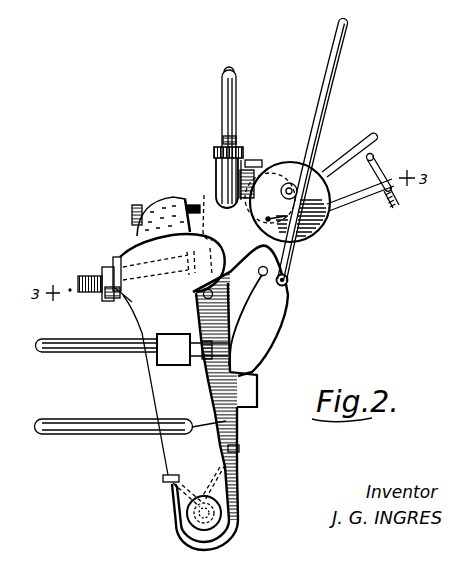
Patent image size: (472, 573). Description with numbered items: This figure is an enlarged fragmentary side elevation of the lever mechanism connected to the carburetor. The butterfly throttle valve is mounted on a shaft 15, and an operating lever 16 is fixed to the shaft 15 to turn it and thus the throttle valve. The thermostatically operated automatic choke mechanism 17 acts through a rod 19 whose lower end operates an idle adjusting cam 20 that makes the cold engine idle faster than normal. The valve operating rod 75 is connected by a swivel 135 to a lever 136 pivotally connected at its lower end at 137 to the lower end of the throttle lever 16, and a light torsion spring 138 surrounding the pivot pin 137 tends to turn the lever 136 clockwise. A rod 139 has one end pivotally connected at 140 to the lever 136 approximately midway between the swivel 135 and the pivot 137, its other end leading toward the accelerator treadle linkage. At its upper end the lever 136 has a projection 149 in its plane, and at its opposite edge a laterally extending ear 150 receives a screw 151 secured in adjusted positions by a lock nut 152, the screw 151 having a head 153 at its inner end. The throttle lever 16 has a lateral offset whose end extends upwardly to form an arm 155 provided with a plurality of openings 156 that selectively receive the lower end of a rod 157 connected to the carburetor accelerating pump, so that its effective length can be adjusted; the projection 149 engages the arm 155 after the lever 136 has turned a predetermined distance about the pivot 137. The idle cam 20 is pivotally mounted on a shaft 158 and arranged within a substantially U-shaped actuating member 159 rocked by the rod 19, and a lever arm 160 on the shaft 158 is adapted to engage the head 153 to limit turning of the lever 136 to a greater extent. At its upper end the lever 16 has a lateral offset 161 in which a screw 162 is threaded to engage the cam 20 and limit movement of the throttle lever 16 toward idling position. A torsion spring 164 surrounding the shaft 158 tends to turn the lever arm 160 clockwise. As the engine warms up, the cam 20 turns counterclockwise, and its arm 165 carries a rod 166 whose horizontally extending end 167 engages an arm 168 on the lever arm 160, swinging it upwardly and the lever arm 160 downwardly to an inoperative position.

The shaft 15 is at (237, 383).
The operating lever 16 is at (240, 483).
The automatic choke mechanism 17 is at (216, 109).
The rod 19 is at (238, 102).
The idle adjusting cam 20 is at (218, 199).
The valve operating rod 75 is at (94, 352).
The swivel 135 is at (167, 361).
The lever 136 is at (170, 462).
The pivot pin 137 is at (213, 514).
The light torsion spring 138 is at (240, 447).
The rod 139 is at (98, 422).
The pivotal connection 140 is at (248, 421).
The projection 149 is at (225, 250).
The laterally extending ear 150 is at (130, 258).
The screw 151 is at (89, 278).
The lock nut 152 is at (112, 297).
The head 153 is at (181, 280).
The arm 155 is at (275, 333).
The openings 156 is at (262, 276).
The rod 157 is at (290, 276).
The shaft 158 is at (283, 184).
The U-shaped actuating member 159 is at (214, 193).
The lever arm 160 is at (240, 172).
The lateral offset 161 is at (180, 192).
The screw 162 is at (137, 206).
The torsion spring 164 is at (274, 160).
The arm 165 is at (339, 218).
The rod 166 is at (392, 165).
The horizontally extending end 167 is at (383, 158).
The arm 168 is at (373, 135).